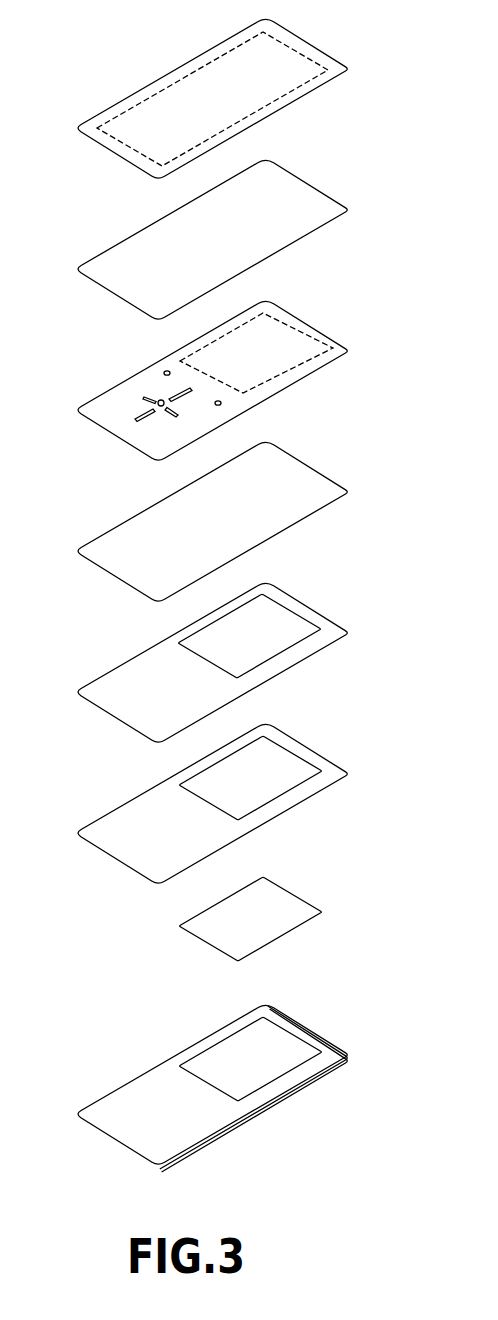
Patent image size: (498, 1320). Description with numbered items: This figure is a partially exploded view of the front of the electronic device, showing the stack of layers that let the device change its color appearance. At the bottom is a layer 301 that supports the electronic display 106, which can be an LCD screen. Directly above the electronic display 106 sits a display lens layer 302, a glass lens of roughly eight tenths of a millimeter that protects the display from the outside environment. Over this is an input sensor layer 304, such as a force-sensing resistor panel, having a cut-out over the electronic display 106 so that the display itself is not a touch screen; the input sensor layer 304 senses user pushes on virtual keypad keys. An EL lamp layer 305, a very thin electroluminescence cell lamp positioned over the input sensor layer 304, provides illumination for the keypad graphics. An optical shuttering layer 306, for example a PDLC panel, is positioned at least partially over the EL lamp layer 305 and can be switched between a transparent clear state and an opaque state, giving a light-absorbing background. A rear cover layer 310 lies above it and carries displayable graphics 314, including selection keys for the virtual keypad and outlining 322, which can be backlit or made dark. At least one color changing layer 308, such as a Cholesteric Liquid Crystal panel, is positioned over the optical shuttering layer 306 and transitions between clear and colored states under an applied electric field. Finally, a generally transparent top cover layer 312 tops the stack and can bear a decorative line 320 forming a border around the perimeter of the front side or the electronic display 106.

The top cover layer 312 is at (299, 34).
The decorative line 320 is at (329, 74).
The color changing layer 308 is at (300, 176).
The rear cover layer 310 is at (302, 316).
The outlining 322 is at (319, 351).
The displayable graphics 314 is at (115, 407).
The optical shuttering layer 306 is at (300, 458).
The EL lamp layer 305 is at (300, 598).
The input sensor layer 304 is at (300, 739).
The display lens layer 302 is at (291, 895).
The layer supporting the electronic display 301 is at (128, 1092).
The electronic display 106 is at (293, 1036).